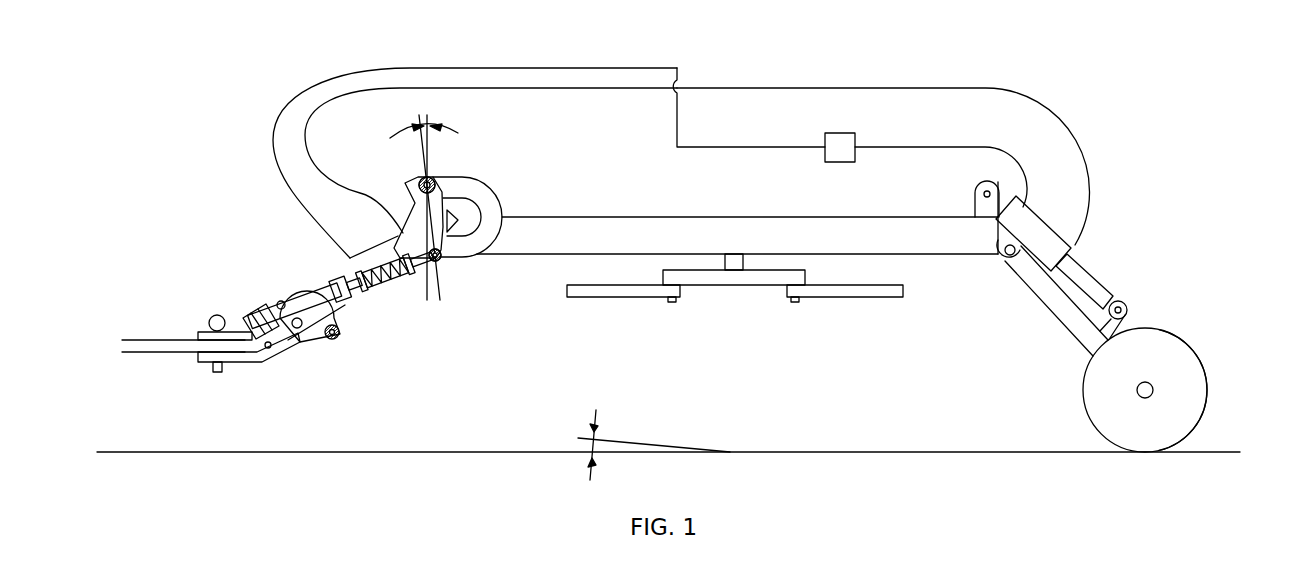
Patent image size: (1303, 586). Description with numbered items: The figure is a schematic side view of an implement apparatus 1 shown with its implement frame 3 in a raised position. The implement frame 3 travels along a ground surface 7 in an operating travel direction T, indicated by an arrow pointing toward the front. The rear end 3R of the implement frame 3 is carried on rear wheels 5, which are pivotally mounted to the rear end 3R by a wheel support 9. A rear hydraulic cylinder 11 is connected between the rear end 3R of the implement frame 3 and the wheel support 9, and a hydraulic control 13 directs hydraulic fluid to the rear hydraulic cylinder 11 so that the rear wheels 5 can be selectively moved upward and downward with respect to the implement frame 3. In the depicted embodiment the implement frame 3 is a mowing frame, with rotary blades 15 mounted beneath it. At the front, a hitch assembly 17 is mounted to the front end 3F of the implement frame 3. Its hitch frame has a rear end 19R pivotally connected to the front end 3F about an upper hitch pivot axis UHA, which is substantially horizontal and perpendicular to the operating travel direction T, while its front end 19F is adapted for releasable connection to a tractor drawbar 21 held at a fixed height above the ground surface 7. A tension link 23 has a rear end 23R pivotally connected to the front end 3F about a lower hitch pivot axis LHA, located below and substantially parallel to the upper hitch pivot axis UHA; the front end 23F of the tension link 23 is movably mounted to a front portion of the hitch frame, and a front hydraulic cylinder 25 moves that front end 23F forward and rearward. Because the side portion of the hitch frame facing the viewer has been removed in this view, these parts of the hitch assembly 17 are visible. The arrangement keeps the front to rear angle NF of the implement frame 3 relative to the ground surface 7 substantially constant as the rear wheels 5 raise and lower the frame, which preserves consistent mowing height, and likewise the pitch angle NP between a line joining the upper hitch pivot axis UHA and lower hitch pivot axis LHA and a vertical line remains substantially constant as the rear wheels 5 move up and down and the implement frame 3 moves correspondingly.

The implement apparatus 1 is at (1168, 145).
The implement frame 3 is at (683, 216).
The front end of the implement frame 3F is at (512, 215).
The rear end of the implement frame 3R is at (990, 256).
The rear wheels 5 is at (1150, 327).
The ground surface 7 is at (992, 452).
The wheel support 9 is at (1050, 312).
The rear hydraulic cylinder 11 is at (1090, 268).
The hydraulic control 13 is at (845, 133).
The rotary blades 15 is at (628, 297).
The hitch assembly 17 is at (316, 238).
The front end of the hitch frame 19F is at (247, 313).
The rear end of the hitch frame 19R is at (408, 181).
The tractor drawbar 21 is at (170, 352).
The tension link 23 is at (387, 295).
The front end of the tension link 23F is at (310, 342).
The rear end of the tension link 23R is at (432, 272).
The front hydraulic cylinder 25 is at (340, 270).
The operating travel direction T is at (170, 213).
The pitch angle NP is at (427, 198).
The upper hitch pivot axis UHA is at (438, 180).
The lower hitch pivot axis LHA is at (440, 262).
The front to rear angle NF is at (638, 444).